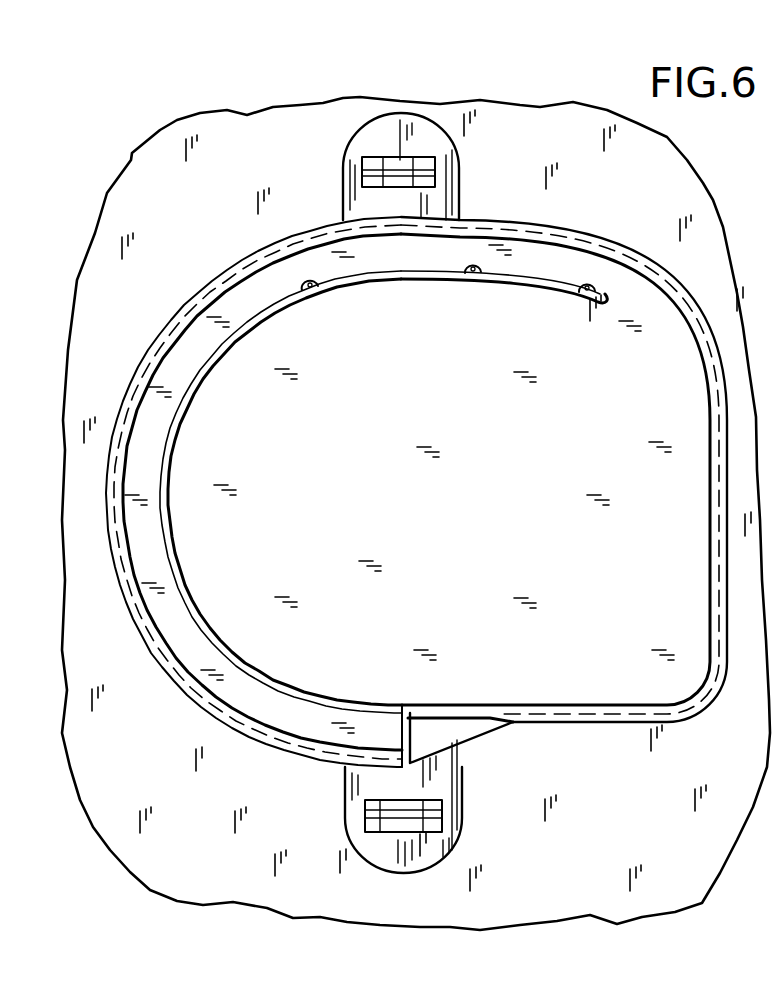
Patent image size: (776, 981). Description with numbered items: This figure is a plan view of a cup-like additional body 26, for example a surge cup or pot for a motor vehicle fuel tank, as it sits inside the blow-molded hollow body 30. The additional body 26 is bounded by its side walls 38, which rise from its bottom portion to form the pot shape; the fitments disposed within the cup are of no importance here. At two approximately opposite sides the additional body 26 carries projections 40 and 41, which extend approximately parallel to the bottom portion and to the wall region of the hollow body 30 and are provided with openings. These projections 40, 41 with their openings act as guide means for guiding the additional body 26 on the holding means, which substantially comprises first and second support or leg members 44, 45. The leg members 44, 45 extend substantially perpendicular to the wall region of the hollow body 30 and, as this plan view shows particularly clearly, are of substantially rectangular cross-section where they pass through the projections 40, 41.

The hollow body 30 is at (673, 203).
The side walls 38 is at (188, 306).
The additional body 26 is at (473, 727).
The projection 41 is at (344, 212).
The second support or leg member 45 is at (363, 160).
The projection 40 is at (352, 788).
The first support or leg member 44 is at (440, 833).